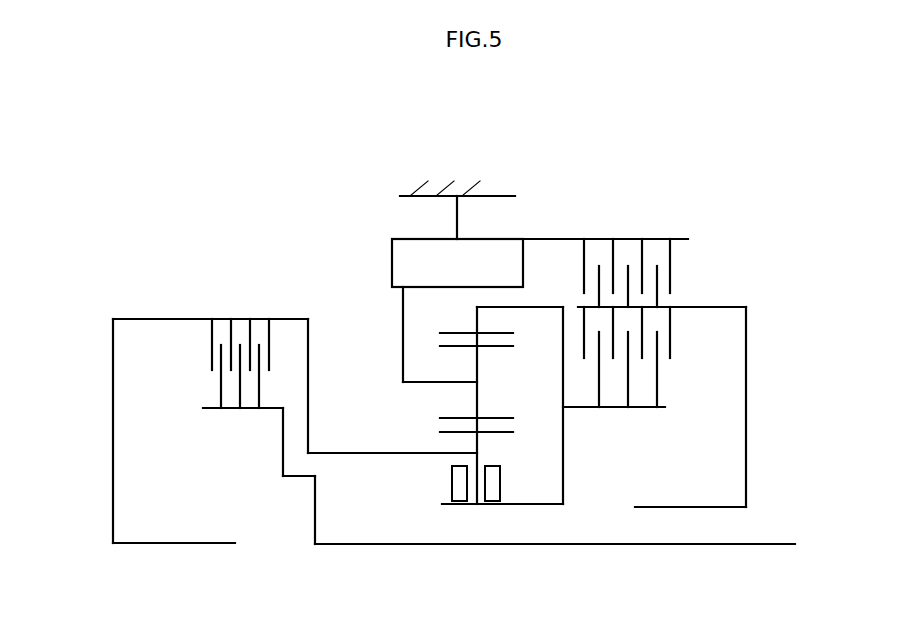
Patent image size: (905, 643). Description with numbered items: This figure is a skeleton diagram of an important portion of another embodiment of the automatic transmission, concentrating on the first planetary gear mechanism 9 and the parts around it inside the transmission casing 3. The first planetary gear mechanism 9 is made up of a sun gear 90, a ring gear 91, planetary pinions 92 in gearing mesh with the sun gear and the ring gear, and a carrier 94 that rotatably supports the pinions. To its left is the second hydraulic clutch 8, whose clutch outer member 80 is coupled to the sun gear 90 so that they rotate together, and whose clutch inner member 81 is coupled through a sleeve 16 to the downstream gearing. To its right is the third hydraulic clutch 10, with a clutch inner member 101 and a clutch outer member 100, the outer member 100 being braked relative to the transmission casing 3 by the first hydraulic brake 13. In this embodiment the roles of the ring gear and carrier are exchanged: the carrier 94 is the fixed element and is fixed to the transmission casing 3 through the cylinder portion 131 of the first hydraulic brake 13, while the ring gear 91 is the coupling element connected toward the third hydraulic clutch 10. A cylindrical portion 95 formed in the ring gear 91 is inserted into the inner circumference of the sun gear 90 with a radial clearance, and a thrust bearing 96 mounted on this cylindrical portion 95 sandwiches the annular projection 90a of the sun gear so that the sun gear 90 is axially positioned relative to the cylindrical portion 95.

The transmission casing 3 is at (462, 188).
The second hydraulic clutch 8 is at (235, 314).
The first planetary gear mechanism 9 is at (385, 338).
The third hydraulic clutch 10 is at (727, 297).
The first hydraulic brake 13 is at (630, 234).
The sleeve 16 is at (588, 547).
The clutch outer member 80 is at (145, 317).
The clutch inner member 81 is at (229, 411).
The sun gear 90 is at (513, 433).
The annular projection 90a is at (474, 458).
The ring gear 91 is at (458, 331).
The planetary pinions 92 is at (492, 348).
The carrier 94 is at (401, 360).
The cylindrical portion 95 is at (562, 508).
The thrust bearing 96 is at (494, 490).
The clutch outer member 100 is at (694, 305).
The clutch inner member 101 is at (612, 410).
The cylinder portion 131 is at (497, 238).